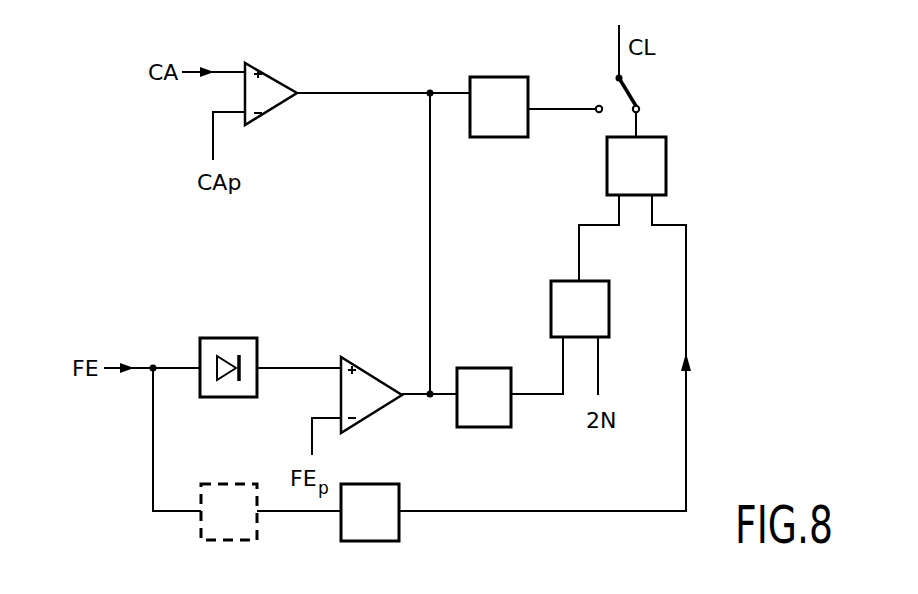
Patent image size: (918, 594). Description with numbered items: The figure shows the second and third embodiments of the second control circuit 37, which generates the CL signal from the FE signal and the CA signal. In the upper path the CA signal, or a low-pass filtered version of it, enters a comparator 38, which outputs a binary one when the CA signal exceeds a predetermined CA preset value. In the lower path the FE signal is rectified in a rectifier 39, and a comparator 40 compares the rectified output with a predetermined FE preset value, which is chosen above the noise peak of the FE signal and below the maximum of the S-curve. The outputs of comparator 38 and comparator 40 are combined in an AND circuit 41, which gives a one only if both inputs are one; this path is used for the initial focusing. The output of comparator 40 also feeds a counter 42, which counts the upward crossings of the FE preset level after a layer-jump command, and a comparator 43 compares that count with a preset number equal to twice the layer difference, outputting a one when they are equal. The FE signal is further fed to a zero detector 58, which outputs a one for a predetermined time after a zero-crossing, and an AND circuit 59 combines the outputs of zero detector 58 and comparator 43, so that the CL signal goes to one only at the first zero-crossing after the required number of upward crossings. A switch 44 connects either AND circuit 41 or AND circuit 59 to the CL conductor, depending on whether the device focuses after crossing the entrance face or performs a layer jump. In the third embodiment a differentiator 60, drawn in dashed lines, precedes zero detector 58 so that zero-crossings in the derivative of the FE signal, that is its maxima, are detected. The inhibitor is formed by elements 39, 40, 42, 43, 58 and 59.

The second control circuit 37 is at (386, 205).
The comparator 38 is at (274, 78).
The rectifier 39 is at (237, 338).
The comparator 40 is at (370, 362).
The AND circuit 41 is at (502, 77).
The counter 42 is at (480, 368).
The comparator 43 is at (551, 300).
The switch 44 is at (638, 93).
The zero detector 58 is at (386, 543).
The AND circuit 59 is at (666, 165).
The differentiator 60 is at (248, 544).